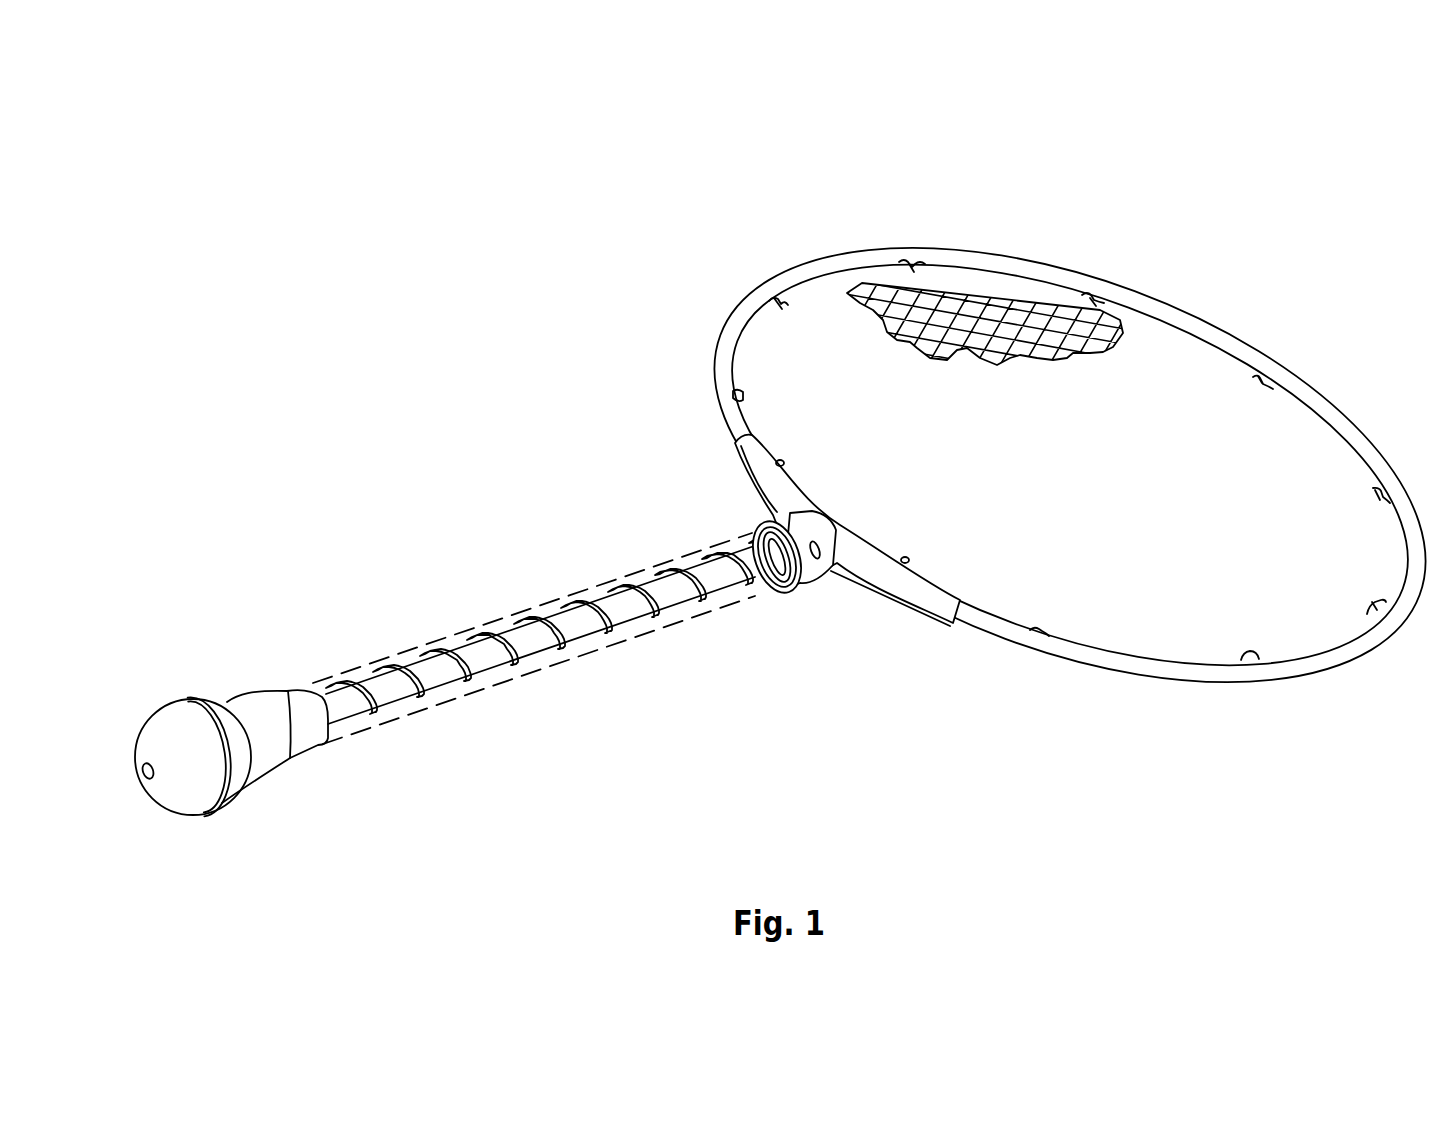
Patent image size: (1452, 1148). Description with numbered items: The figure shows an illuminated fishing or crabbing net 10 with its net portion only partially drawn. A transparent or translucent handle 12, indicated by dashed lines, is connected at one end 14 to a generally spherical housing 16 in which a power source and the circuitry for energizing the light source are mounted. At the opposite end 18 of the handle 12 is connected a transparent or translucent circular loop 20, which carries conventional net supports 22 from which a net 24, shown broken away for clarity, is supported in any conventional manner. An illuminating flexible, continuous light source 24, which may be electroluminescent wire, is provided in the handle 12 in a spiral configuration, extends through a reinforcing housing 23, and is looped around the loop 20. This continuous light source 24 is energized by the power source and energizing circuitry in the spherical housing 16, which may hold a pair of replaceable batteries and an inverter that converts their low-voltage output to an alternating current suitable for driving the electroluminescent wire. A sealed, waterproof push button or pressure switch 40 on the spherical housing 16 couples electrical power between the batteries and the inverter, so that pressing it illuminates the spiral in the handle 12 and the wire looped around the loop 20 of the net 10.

The fishing or crabbing net 10 is at (576, 439).
The handle 12 is at (393, 653).
The one end 14 is at (309, 616).
The spherical housing 16 is at (188, 698).
The opposite end 18 is at (727, 499).
The circular loop 20 is at (771, 198).
The net supports 22 is at (740, 397).
The reinforcing housing 23 is at (866, 600).
The continuous light source 24 is at (1060, 362).
The push button or pressure switch 40 is at (152, 783).